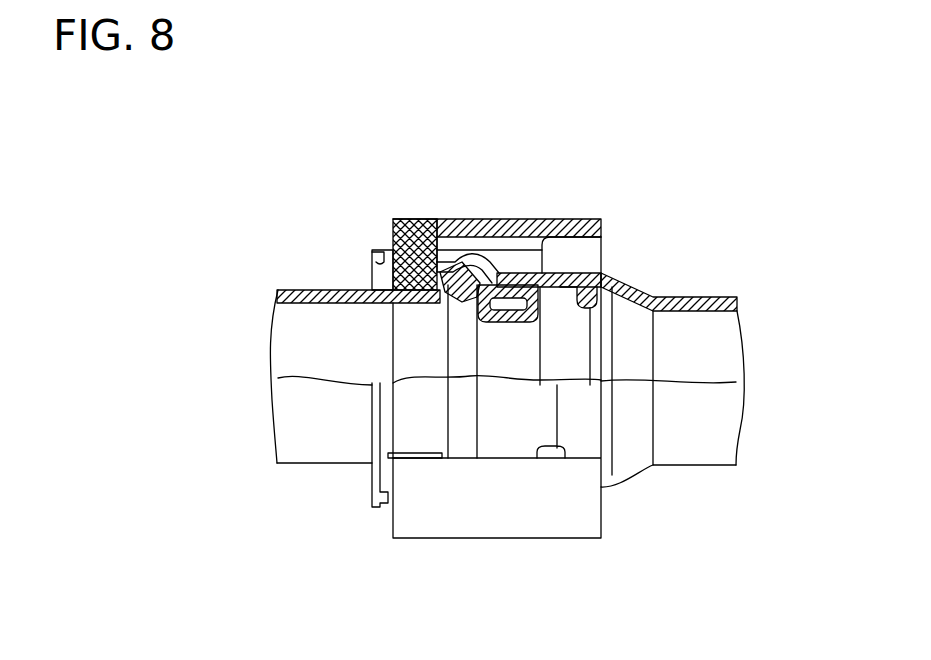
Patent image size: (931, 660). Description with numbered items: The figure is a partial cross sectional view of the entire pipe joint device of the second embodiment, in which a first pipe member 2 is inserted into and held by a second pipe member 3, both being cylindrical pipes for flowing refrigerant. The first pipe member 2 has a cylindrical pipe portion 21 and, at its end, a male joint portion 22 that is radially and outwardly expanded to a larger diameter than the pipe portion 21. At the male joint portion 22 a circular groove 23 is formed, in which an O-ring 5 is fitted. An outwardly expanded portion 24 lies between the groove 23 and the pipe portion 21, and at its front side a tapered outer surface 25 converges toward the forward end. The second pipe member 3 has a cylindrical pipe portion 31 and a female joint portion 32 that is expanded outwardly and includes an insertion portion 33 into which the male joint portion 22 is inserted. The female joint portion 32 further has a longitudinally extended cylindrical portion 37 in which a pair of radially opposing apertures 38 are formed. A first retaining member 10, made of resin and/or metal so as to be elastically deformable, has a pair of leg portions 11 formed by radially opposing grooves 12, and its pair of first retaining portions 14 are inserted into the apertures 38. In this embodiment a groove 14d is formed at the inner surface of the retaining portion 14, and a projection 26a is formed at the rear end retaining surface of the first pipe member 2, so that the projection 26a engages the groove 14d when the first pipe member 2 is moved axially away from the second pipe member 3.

The first pipe member 2 is at (282, 289).
The cylindrical pipe portion 21 is at (315, 297).
The second pipe member 3 is at (688, 296).
The cylindrical pipe portion 31 is at (718, 297).
The first retaining member 10 is at (511, 219).
The leg portions 11 is at (455, 248).
The first retaining portions 14 is at (421, 241).
The groove 14d is at (393, 219).
The longitudinally extended cylindrical portion 37 is at (372, 251).
The apertures 38 is at (418, 460).
The outwardly expanded portion 24 is at (478, 256).
The projection 26a is at (432, 258).
The tapered outer surface 25 is at (453, 286).
The circular groove 23 is at (498, 318).
The O-ring 5 is at (508, 318).
The grooves 12 is at (550, 460).
The female joint portion 32 is at (565, 261).
The insertion portion 33 is at (591, 282).
The male joint portion 22 is at (567, 312).